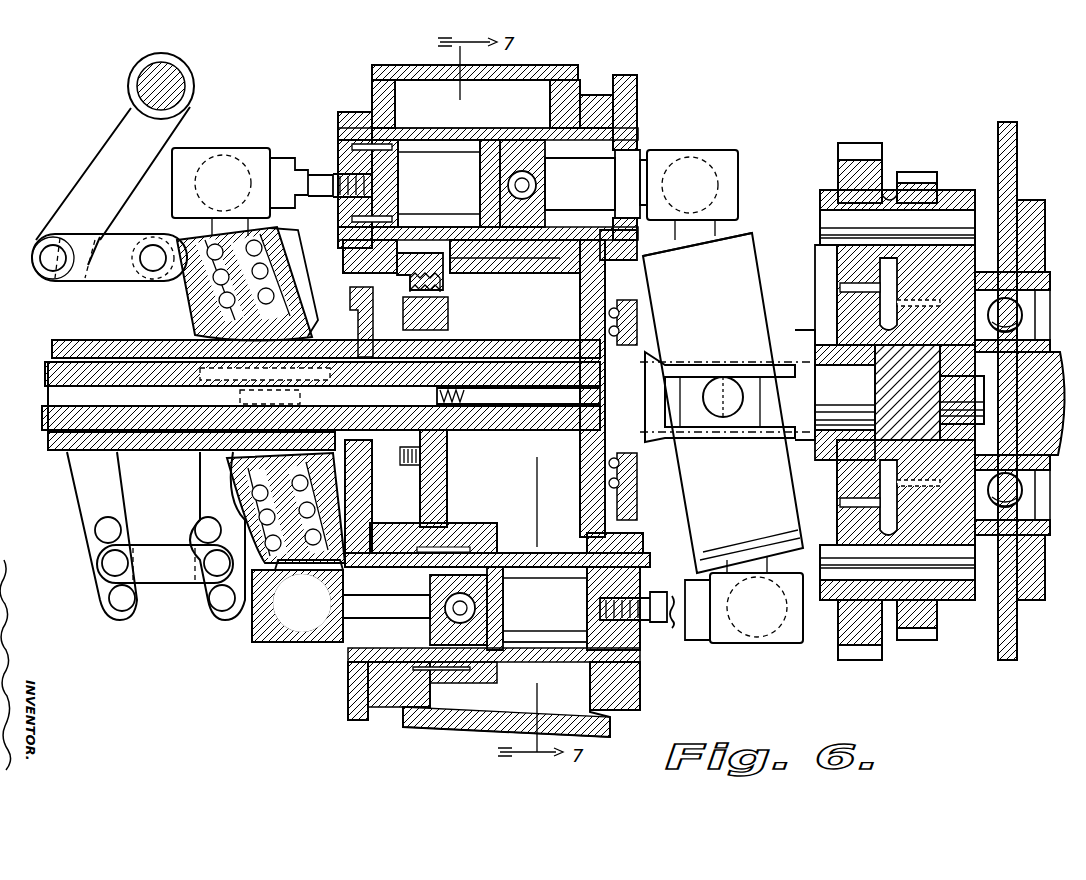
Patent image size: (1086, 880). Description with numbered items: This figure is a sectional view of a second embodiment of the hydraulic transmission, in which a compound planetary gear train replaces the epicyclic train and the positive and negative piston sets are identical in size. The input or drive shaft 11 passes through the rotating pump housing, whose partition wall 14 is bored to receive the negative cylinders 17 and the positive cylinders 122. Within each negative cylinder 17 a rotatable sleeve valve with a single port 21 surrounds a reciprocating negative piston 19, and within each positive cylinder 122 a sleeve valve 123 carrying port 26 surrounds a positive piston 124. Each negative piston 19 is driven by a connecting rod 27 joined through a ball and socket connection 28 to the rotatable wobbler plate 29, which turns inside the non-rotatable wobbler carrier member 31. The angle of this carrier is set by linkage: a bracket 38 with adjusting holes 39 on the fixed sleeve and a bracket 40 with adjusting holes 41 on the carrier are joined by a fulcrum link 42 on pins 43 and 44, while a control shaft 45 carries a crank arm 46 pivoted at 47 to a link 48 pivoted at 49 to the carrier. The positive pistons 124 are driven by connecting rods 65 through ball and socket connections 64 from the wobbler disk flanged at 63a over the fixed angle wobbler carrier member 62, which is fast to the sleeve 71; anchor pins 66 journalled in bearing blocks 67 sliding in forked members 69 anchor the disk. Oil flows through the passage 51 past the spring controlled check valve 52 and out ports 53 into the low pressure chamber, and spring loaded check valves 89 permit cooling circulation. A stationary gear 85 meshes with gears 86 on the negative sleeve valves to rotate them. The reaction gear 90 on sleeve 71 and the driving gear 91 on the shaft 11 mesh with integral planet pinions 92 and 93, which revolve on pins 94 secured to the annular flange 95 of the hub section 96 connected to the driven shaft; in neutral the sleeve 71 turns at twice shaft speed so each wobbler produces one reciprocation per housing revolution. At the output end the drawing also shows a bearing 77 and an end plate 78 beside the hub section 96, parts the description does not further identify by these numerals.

The input or drive shaft 11 is at (52, 358).
The partition wall 14 is at (504, 100).
The negative cylinder 17 is at (642, 578).
The negative piston 19 is at (498, 620).
The sleeve valve port 21 is at (563, 608).
The sleeve valve port 26 is at (439, 183).
The connecting rod 27 is at (318, 640).
The ball and socket connection 28 is at (215, 148).
The wobbler plate 29 is at (232, 300).
The wobbler carrier member 31 is at (290, 268).
The arm or bracket 38 is at (88, 490).
The adjusting holes 39 is at (120, 608).
The bracket 40 is at (190, 531).
The adjusting holes 41 is at (222, 608).
The fulcrum link 42 is at (165, 564).
The pin 43 is at (112, 566).
The pin 44 is at (210, 568).
The control shaft 45 is at (172, 92).
The crank arm 46 is at (98, 146).
The pivot connection 47 is at (53, 271).
The link 48 is at (100, 272).
The pivot 49 is at (153, 271).
The oil passage 51 is at (96, 330).
The check valve 52 is at (448, 386).
The ports 53 is at (478, 364).
The wobbler carrier member 62 is at (723, 403).
The wobbler disk flange 63a is at (752, 242).
The ball and socket connection 64 is at (720, 168).
The connecting rod 65 is at (570, 183).
The anchor pin 66 is at (735, 418).
The bearing block 67 is at (745, 395).
The forked member 69 is at (700, 430).
The sleeve 71 is at (802, 330).
The bearing 77 is at (1040, 282).
The plate 78 is at (1010, 172).
The stationary gear 85 is at (351, 281).
The gears 86 is at (348, 700).
The check valve 89 is at (442, 295).
The reaction gear 90 is at (827, 320).
The driving gear 91 is at (920, 302).
The planet pinion 92 is at (870, 148).
The planet pinion 93 is at (920, 178).
The pin or shaft 94 is at (950, 215).
The annular flange 95 is at (968, 258).
The hub or shaft section 96 is at (1004, 398).
The positive cylinder 122 is at (468, 126).
The sleeve valve 123 is at (410, 165).
The positive piston 124 is at (480, 195).